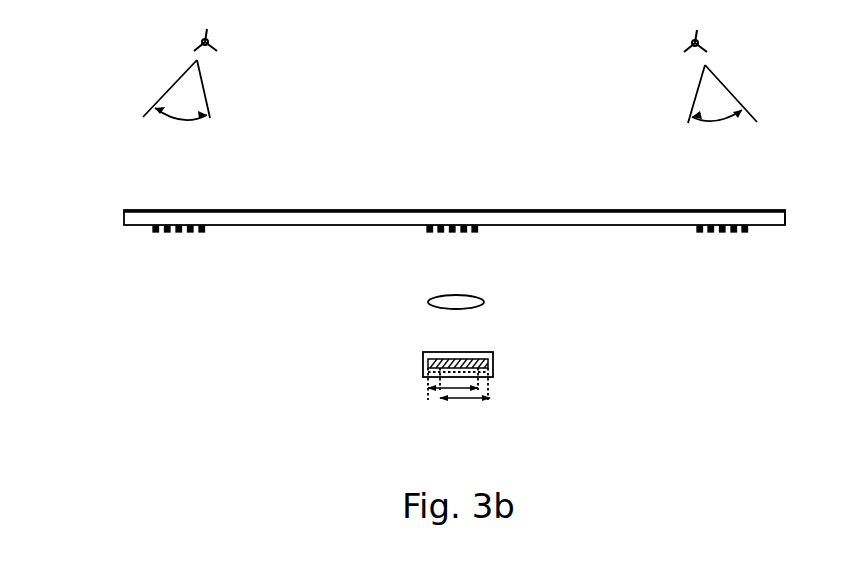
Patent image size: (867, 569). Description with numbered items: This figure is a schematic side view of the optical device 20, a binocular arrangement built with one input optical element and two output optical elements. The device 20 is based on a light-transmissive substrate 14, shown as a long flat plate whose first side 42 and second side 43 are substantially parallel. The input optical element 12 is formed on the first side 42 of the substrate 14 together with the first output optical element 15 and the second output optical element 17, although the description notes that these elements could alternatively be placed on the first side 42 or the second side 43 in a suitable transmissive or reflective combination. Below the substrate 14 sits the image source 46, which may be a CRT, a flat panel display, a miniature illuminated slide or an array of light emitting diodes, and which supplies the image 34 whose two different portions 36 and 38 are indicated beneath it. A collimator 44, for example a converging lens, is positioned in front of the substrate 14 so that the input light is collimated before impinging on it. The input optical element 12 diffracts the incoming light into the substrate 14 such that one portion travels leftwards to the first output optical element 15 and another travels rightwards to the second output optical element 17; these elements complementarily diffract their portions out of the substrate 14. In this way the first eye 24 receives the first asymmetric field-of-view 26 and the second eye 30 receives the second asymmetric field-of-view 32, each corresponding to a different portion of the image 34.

The device 20 is at (98, 151).
The first eye 24 is at (218, 34).
The first asymmetric field-of-view 26 is at (176, 90).
The second eye 30 is at (708, 34).
The second asymmetric field-of-view 32 is at (722, 94).
The first side 42 is at (555, 211).
The second side 43 is at (330, 226).
The light-transmissive substrate 14 is at (786, 216).
The first output optical element 15 is at (185, 233).
The input optical element 12 is at (463, 233).
The second output optical element 17 is at (712, 238).
The collimator 44 is at (462, 302).
The image source 46 is at (494, 357).
The image 34 is at (433, 362).
The first portion of image 36 is at (438, 392).
The second portion of image 38 is at (478, 402).